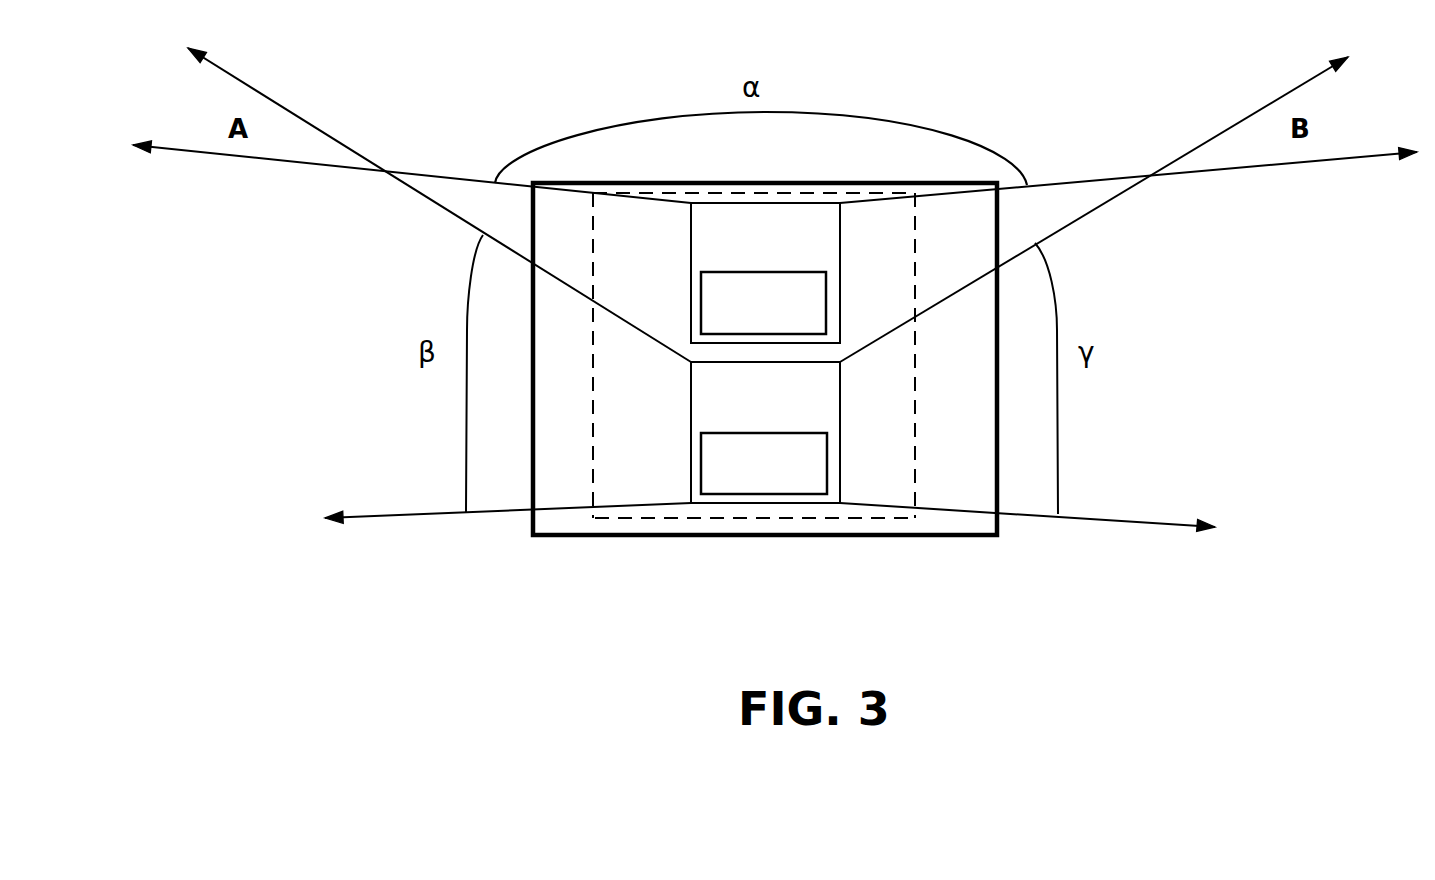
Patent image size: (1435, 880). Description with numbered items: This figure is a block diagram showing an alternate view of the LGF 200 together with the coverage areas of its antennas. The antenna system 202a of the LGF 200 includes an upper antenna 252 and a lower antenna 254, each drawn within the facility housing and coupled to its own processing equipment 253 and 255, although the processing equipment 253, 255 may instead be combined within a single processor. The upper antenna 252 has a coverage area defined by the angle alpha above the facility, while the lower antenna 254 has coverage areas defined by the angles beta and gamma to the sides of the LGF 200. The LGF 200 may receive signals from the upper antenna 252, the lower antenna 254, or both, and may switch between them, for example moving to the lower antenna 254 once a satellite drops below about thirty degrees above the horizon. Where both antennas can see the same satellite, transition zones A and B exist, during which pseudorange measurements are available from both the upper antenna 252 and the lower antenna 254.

The LGF 200 is at (660, 537).
The antenna system 202a is at (918, 372).
The upper antenna 252 is at (691, 241).
The processing equipment 253 is at (701, 302).
The lower antenna 254 is at (691, 401).
The processing equipment 255 is at (701, 463).